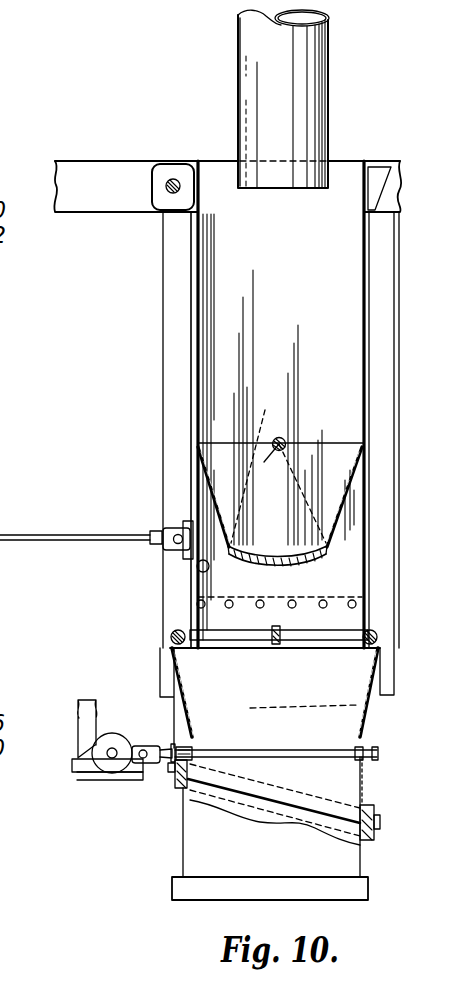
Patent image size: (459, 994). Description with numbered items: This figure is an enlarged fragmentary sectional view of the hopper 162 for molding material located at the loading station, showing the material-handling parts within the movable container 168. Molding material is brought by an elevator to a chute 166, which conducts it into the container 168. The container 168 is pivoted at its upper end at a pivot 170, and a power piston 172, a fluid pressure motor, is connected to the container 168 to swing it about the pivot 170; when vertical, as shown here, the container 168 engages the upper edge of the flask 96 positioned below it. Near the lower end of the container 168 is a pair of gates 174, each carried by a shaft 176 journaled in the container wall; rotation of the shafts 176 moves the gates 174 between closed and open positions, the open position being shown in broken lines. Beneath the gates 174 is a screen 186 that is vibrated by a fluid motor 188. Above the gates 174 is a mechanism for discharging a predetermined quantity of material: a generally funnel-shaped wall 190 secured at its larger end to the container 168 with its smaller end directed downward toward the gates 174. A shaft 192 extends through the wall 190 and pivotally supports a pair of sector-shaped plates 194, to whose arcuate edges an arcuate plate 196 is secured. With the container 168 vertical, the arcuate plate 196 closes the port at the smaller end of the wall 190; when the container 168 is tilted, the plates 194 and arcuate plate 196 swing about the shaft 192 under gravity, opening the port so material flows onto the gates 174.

The flask 96 is at (200, 831).
The hopper 162 is at (176, 235).
The chute 166 is at (248, 88).
The container 168 is at (197, 278).
The pivot 170 is at (172, 180).
The power piston 172 is at (96, 525).
The gates 174 is at (298, 648).
The shaft 176 is at (175, 632).
The screen 186 is at (321, 751).
The fluid motor 188 is at (114, 740).
The funnel-shaped wall 190 is at (219, 475).
The shaft 192 is at (286, 441).
The plates 194 is at (257, 432).
The arcuate plate 196 is at (248, 557).